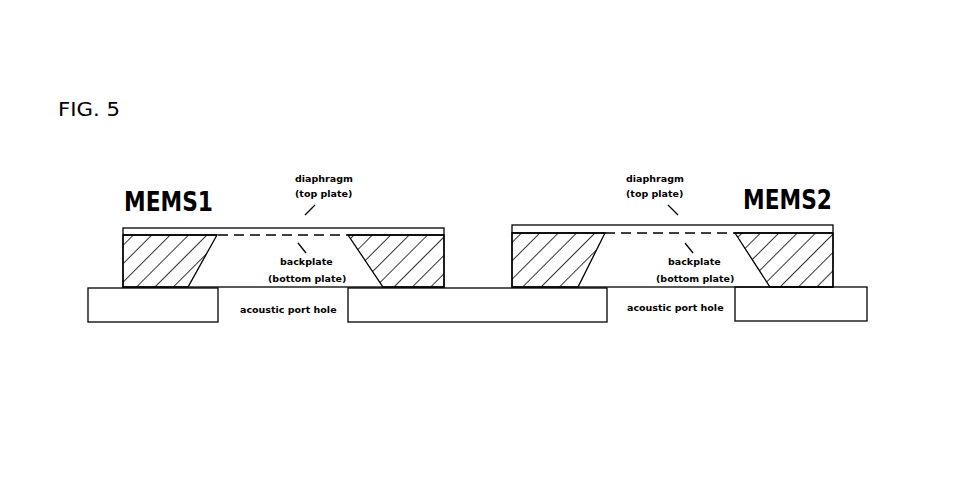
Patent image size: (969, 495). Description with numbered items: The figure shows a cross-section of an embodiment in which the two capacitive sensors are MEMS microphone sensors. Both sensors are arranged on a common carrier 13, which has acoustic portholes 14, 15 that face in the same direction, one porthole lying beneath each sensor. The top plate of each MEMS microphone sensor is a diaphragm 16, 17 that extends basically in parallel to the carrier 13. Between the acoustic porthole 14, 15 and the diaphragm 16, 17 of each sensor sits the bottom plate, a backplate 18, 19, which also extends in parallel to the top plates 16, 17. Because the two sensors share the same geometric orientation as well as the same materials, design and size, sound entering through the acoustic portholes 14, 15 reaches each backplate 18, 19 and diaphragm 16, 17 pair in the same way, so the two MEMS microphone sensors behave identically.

The carrier 13 is at (87, 307).
The acoustic porthole 14 is at (289, 340).
The acoustic porthole 15 is at (664, 345).
The diaphragm 16 is at (263, 227).
The diaphragm 17 is at (625, 225).
The backplate 18 is at (245, 259).
The backplate 19 is at (626, 257).